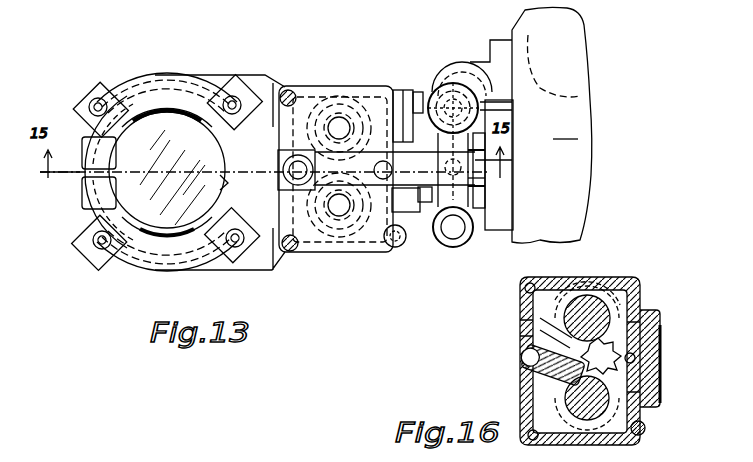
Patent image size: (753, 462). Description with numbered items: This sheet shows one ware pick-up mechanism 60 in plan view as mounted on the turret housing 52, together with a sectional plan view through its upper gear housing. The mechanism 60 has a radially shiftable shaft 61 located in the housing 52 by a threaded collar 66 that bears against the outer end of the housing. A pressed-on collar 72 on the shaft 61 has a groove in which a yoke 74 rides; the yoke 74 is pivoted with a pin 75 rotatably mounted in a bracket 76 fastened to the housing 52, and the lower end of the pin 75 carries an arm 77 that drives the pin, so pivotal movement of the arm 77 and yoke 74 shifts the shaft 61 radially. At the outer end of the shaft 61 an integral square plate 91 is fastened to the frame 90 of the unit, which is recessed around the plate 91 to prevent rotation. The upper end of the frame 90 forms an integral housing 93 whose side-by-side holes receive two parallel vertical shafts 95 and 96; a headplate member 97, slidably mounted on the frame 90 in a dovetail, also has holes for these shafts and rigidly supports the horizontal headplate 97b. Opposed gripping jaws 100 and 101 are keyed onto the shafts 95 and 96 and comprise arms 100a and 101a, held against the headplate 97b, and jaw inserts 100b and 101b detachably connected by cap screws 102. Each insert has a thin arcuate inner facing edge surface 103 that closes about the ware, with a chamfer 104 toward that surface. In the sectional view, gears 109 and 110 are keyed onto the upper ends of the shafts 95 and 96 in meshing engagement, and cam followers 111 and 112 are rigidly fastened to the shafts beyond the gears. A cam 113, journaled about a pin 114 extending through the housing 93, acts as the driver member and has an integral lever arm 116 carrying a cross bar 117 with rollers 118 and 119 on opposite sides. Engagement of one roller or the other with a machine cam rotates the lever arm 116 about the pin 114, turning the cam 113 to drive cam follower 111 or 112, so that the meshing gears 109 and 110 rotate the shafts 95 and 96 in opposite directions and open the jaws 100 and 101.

In FIG. 13, the housing 52 is at (552, 125).
In FIG. 13, the ware pick-up mechanism 60 is at (367, 59).
In FIG. 13, the shaft 61 is at (486, 195).
In FIG. 13, the threaded collar 66 is at (505, 230).
In FIG. 13, the collar 72 is at (486, 186).
In FIG. 13, the yoke 74 is at (492, 158).
In FIG. 13, the pin 75 is at (460, 70).
In FIG. 13, the bracket 76 is at (496, 40).
In FIG. 13, the arm 77 is at (578, 42).
In FIG. 13, the frame 90 is at (403, 90).
In FIG. 13, the plate 91 is at (376, 168).
In FIG. 13, the housing 93 is at (308, 86).
In FIG. 16, the housing 93 is at (535, 322).
In FIG. 16, the shaft 95 is at (645, 376).
In FIG. 16, the shaft 96 is at (612, 328).
In FIG. 16, the headplate member 97 is at (650, 332).
In FIG. 13, the horizontal headplate 97b is at (112, 173).
In FIG. 13, the gripping jaw 100 is at (82, 200).
In FIG. 13, the arm 100a is at (270, 262).
In FIG. 13, the jaw insert 100b is at (142, 262).
In FIG. 13, the gripping jaw 101 is at (78, 122).
In FIG. 13, the arm 101a is at (273, 83).
In FIG. 13, the jaw insert 101b is at (150, 100).
In FIG. 13, the cap screw 102 is at (98, 100).
In FIG. 13, the inner facing edge surface 103 is at (167, 172).
In FIG. 13, the chamfer 104 is at (214, 182).
In FIG. 16, the gear 109 is at (636, 362).
In FIG. 16, the gear 110 is at (616, 348).
In FIG. 16, the cam follower 111 is at (606, 405).
In FIG. 16, the cam follower 112 is at (590, 298).
In FIG. 13, the cam 113 is at (322, 130).
In FIG. 16, the cam 113 is at (545, 325).
In FIG. 13, the pin 114 is at (310, 252).
In FIG. 16, the pin 114 is at (530, 362).
In FIG. 13, the lever arm 116 is at (380, 250).
In FIG. 13, the cross bar 117 is at (430, 215).
In FIG. 13, the roller 118 is at (460, 247).
In FIG. 13, the roller 119 is at (432, 100).